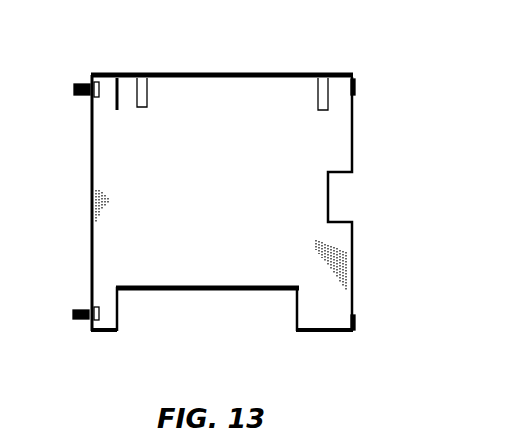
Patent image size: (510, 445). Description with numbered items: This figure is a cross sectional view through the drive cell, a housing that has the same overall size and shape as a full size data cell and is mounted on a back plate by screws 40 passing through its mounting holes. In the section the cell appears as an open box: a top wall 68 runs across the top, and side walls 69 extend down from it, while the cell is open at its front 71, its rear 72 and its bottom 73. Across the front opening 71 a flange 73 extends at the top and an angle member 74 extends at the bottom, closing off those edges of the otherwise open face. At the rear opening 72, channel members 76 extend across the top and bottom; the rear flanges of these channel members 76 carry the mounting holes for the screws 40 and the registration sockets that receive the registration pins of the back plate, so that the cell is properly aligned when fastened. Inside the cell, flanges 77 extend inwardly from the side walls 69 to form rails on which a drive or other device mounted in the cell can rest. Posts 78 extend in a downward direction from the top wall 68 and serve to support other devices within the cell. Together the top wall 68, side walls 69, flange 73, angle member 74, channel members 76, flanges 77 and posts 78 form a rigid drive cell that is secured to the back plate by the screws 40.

The top wall 68 is at (226, 73).
The side walls 69 is at (226, 197).
The front opening 71 is at (342, 152).
The rear opening 72 is at (113, 180).
The flange 73 is at (355, 82).
The angle member 74 is at (356, 325).
The channel members 76 is at (92, 78).
The flanges 77 is at (270, 286).
The posts 78 is at (143, 105).
The screws 40 is at (80, 95).